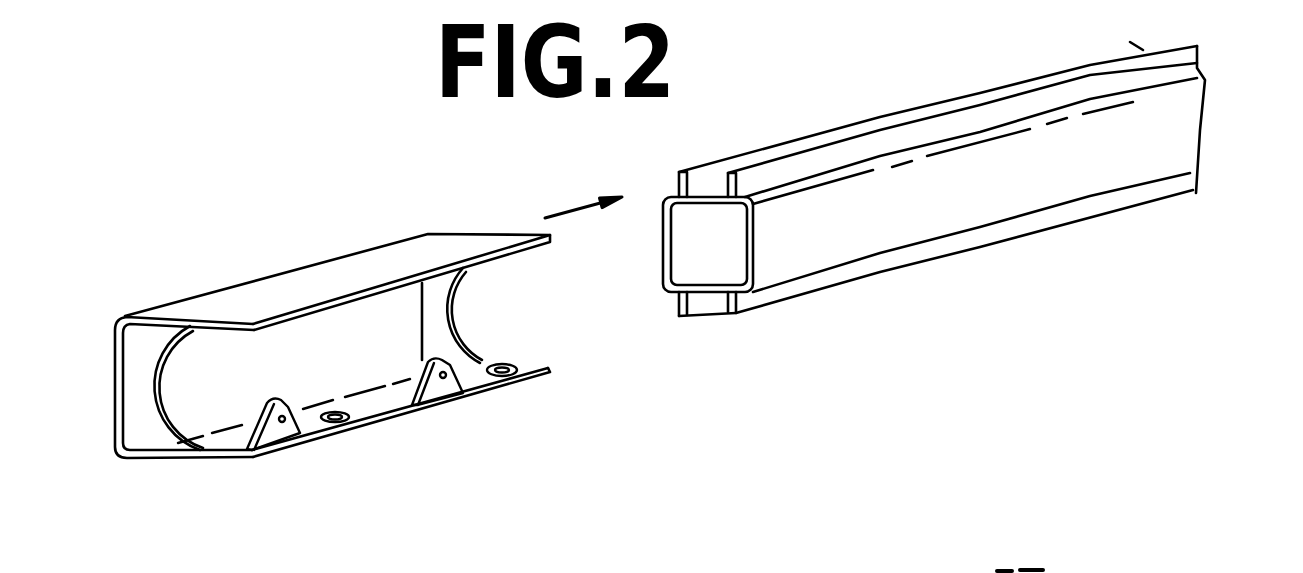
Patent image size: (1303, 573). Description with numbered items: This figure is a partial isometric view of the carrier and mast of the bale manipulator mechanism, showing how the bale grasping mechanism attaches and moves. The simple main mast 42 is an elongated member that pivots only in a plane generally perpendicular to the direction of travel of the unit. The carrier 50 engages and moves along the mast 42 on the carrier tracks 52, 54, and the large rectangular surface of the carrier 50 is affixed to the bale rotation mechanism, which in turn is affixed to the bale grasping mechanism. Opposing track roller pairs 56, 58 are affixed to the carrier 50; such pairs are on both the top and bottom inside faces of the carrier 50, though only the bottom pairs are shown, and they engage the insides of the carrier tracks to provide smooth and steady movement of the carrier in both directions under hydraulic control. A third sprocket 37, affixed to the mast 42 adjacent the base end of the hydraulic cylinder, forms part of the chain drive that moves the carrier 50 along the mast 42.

The third sprocket 37 is at (70, 572).
The main mast 42 is at (1182, 123).
The carrier 50 is at (277, 292).
The carrier track 52 is at (798, 167).
The carrier track 54 is at (703, 297).
The track roller pair 56 is at (443, 395).
The track roller pair 58 is at (505, 367).